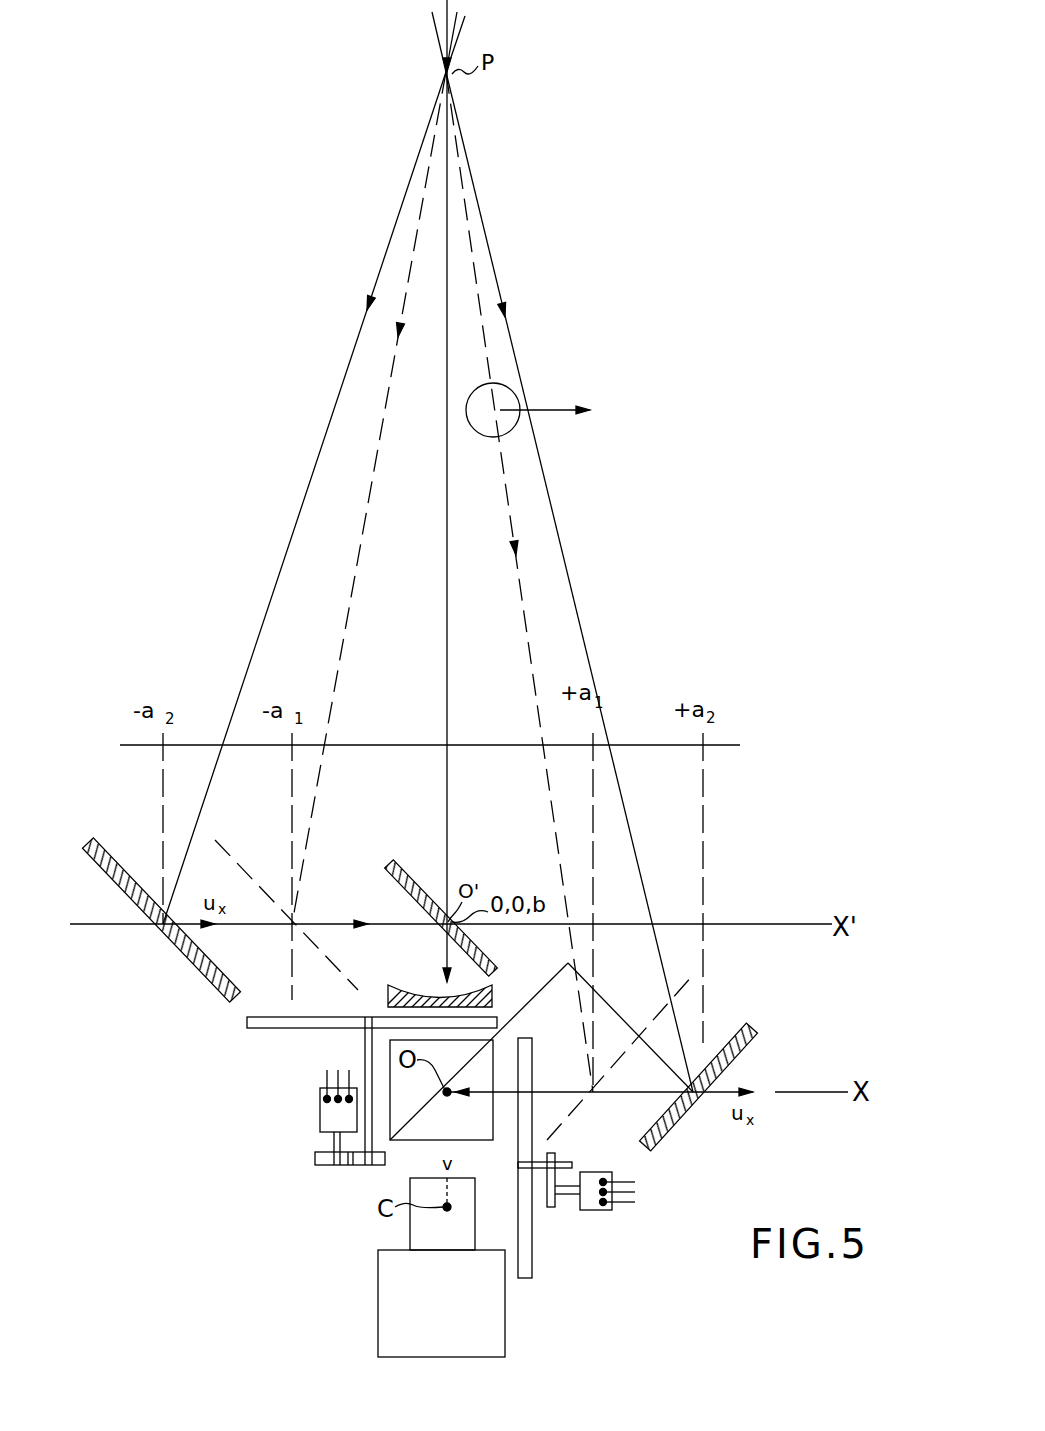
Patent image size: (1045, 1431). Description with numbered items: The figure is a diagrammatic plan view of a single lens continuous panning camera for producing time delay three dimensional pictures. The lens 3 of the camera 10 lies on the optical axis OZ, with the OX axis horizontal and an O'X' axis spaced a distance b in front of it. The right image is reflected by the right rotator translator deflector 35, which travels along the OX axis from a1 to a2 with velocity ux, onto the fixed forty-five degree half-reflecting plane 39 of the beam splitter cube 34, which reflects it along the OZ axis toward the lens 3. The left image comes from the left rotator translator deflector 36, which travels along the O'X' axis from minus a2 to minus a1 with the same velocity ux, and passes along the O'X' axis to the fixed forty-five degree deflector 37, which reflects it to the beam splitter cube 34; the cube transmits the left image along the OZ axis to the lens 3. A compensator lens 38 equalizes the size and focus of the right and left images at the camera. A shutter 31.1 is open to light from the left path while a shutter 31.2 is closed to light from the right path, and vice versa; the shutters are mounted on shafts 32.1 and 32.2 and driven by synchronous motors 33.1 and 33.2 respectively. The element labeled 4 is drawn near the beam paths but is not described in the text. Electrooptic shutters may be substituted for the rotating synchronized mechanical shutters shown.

The measuring point / light source 4 is at (500, 403).
The left rotator translator deflector 36 is at (161, 920).
The fixed 45° deflector 37 is at (474, 944).
The compensator lens 38 is at (492, 994).
The half-reflecting plane 39 is at (462, 1060).
The beam splitter cube 34 is at (475, 1125).
The right rotator translator deflector 35 is at (740, 1052).
The shutter 31.1 is at (288, 1030).
The shutter 31.2 is at (532, 1264).
The shaft 32.1 is at (360, 1167).
The shaft 32.2 is at (572, 1164).
The synchronous motor 33.1 is at (321, 1116).
The synchronous motor 33.2 is at (591, 1210).
The lens 3 is at (453, 1238).
The camera 10 is at (454, 1312).